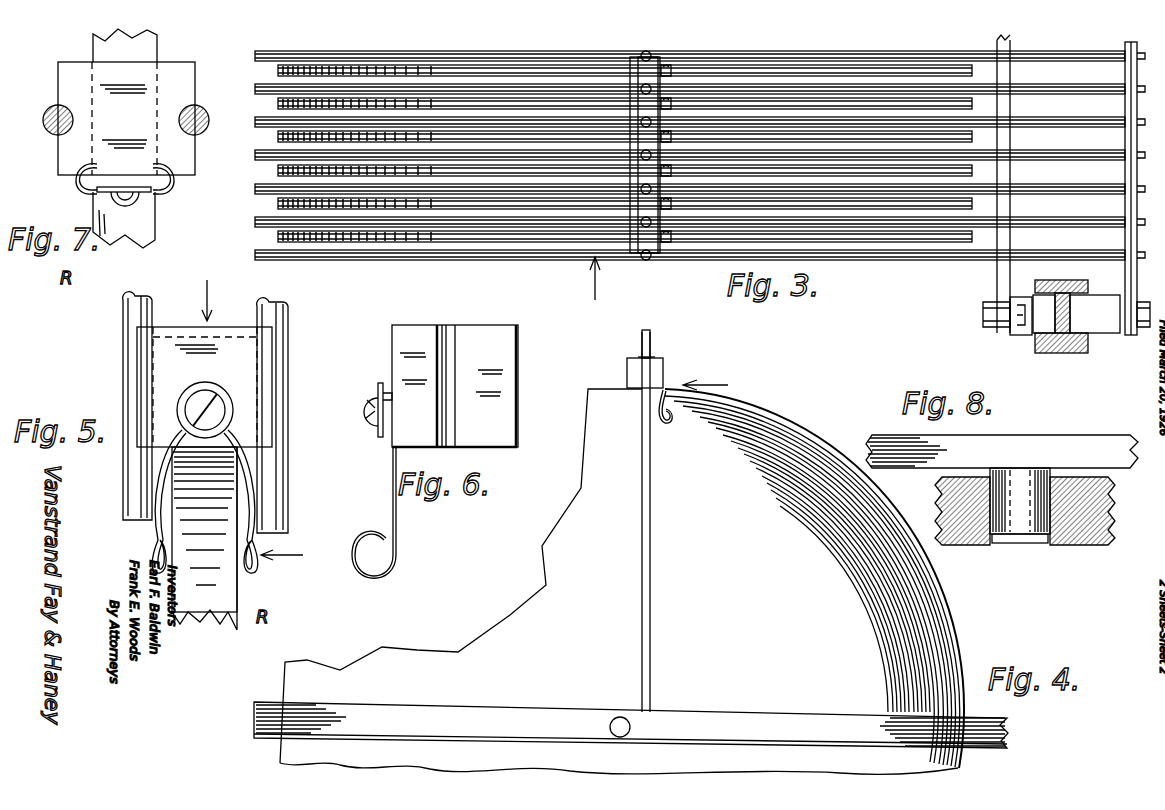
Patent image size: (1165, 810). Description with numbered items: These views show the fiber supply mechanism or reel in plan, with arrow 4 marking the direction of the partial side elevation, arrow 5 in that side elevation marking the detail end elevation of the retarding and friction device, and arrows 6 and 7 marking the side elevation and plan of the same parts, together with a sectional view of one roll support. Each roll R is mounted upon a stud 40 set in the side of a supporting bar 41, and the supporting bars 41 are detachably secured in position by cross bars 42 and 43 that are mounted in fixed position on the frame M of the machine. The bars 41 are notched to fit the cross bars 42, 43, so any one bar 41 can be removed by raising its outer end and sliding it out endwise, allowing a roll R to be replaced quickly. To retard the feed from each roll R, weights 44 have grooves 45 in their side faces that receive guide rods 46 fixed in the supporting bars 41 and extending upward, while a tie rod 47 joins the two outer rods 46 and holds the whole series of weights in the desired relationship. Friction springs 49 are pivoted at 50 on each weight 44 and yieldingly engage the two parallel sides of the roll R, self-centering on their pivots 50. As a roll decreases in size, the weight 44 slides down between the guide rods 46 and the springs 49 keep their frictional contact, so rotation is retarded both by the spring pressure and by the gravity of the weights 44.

In FIG. 3, the arrow 4 is at (603, 279).
In FIG. 4, the arrow 5 is at (705, 375).
In FIG. 5, the arrow 6 is at (282, 566).
In FIG. 5, the arrow 7 is at (199, 300).
In FIG. 4, the stud 40 is at (630, 727).
In FIG. 8, the stud 40 is at (1020, 528).
In FIG. 3, the supporting bar 41 is at (494, 253).
In FIG. 4, the supporting bar 41 is at (478, 731).
In FIG. 8, the supporting bar 41 is at (1102, 460).
In FIG. 3, the cross bar 42 is at (996, 268).
In FIG. 3, the cross bar 43 is at (1132, 265).
In FIG. 7, the weight 44 is at (183, 70).
In FIG. 5, the weight 44 is at (177, 392).
In FIG. 6, the weight 44 is at (419, 333).
In FIG. 7, the groove 45 is at (180, 108).
In FIG. 5, the groove 45 is at (205, 387).
In FIG. 6, the groove 45 is at (458, 338).
In FIG. 7, the guide rod 46 is at (52, 125).
In FIG. 5, the guide rod 46 is at (143, 298).
In FIG. 3, the guide rod 46 is at (652, 55).
In FIG. 4, the guide rod 46 is at (648, 332).
In FIG. 3, the tie rod 47 is at (642, 53).
In FIG. 4, the tie rod 47 is at (640, 358).
In FIG. 7, the friction spring 49 is at (172, 204).
In FIG. 5, the friction spring 49 is at (205, 501).
In FIG. 6, the friction spring 49 is at (395, 518).
In FIG. 4, the friction spring 49 is at (669, 420).
In FIG. 7, the pivot 50 is at (97, 246).
In FIG. 5, the pivot 50 is at (217, 397).
In FIG. 6, the pivot 50 is at (376, 398).
In FIG. 8, the roll R is at (1087, 544).
In FIG. 3, the frame M is at (1072, 353).